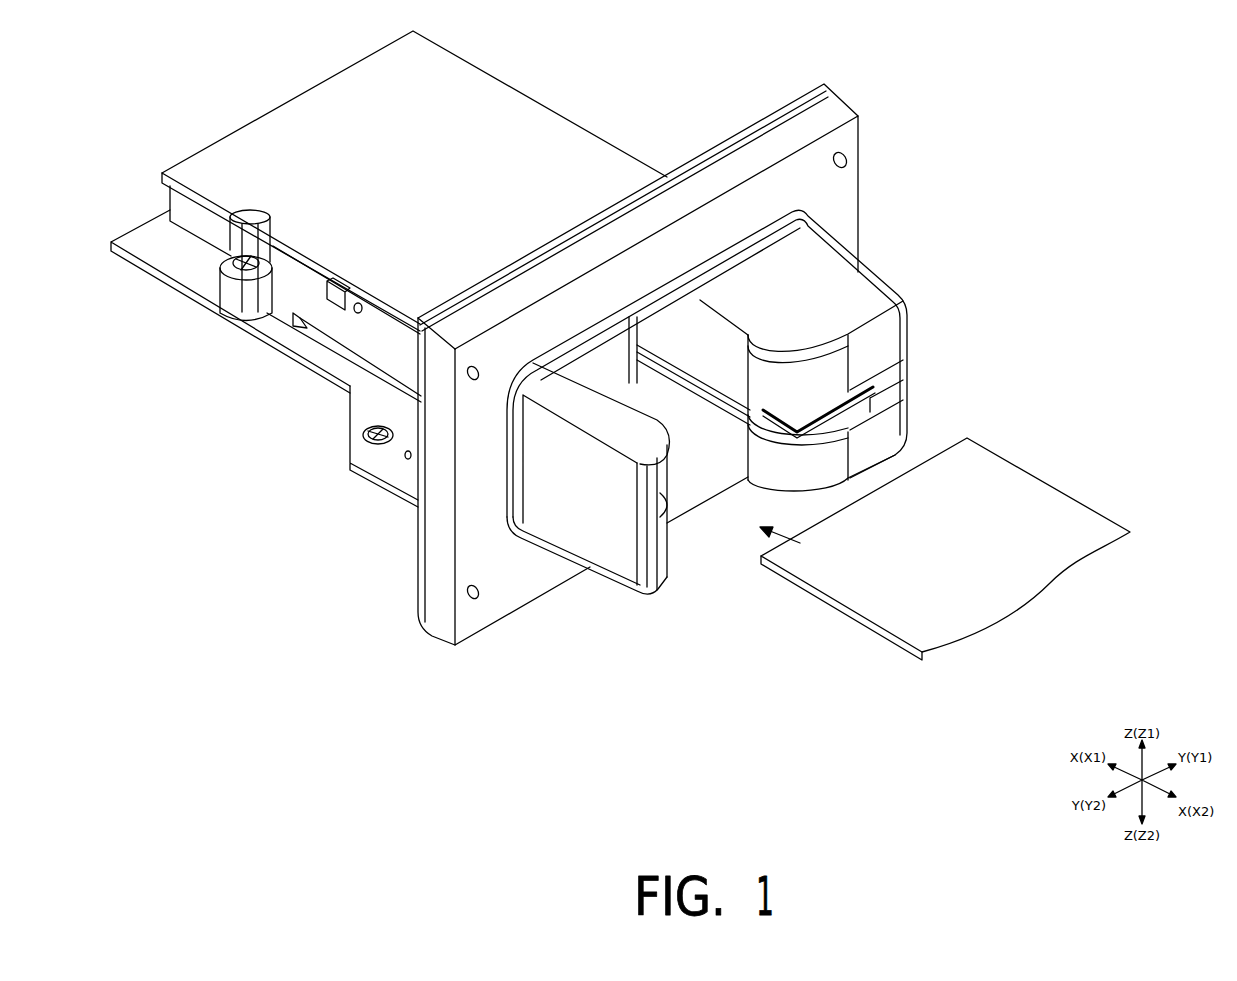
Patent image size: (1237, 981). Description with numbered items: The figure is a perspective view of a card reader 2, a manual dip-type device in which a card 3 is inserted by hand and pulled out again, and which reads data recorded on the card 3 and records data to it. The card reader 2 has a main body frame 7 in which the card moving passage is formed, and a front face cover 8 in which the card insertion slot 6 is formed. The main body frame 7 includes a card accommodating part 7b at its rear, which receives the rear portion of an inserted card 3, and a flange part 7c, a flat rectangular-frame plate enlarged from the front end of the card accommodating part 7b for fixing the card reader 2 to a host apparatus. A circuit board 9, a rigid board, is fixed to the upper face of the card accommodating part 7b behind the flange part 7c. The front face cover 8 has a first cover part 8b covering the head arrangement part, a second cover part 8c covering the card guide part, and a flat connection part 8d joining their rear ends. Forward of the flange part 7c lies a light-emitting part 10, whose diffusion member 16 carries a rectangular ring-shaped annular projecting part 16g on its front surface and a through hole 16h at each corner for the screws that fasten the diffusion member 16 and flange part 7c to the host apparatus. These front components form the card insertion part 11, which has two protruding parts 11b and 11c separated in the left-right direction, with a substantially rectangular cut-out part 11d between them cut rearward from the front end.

The card reader 2 is at (915, 88).
The card 3 is at (1052, 483).
The card insertion slot 6 is at (860, 414).
The main body frame 7 is at (469, 302).
The card accommodating part 7b is at (278, 356).
The flange part 7c is at (469, 289).
The front face cover 8 is at (744, 419).
The first cover part 8b is at (909, 344).
The second cover part 8c is at (603, 588).
The connection part 8d is at (596, 343).
The circuit board 9 is at (290, 100).
The light-emitting part 10 is at (682, 380).
The card insertion part 11 is at (750, 460).
The protruding part 11b is at (909, 378).
The protruding part 11c is at (660, 588).
The cut-out part 11d is at (799, 550).
The diffusion member 16 is at (682, 380).
The annular projecting part 16g is at (803, 226).
The through hole 16h is at (846, 158).